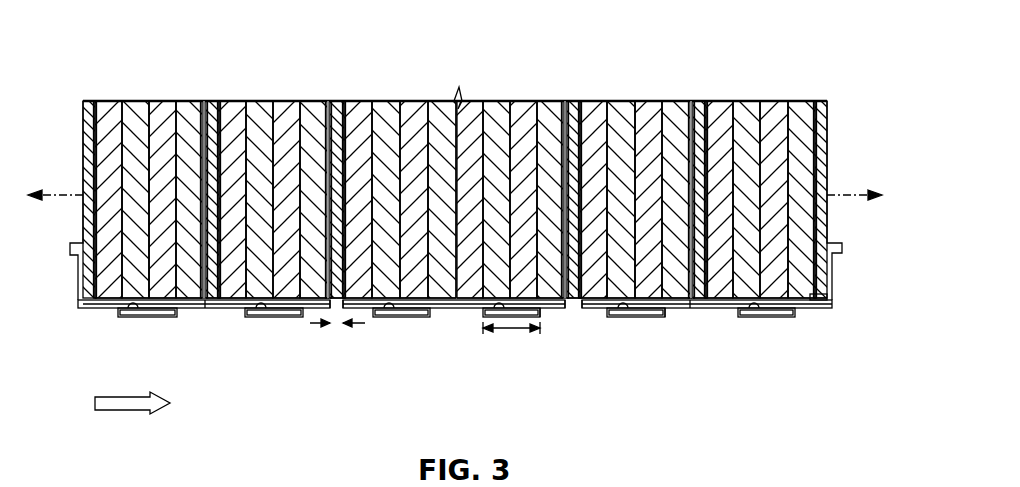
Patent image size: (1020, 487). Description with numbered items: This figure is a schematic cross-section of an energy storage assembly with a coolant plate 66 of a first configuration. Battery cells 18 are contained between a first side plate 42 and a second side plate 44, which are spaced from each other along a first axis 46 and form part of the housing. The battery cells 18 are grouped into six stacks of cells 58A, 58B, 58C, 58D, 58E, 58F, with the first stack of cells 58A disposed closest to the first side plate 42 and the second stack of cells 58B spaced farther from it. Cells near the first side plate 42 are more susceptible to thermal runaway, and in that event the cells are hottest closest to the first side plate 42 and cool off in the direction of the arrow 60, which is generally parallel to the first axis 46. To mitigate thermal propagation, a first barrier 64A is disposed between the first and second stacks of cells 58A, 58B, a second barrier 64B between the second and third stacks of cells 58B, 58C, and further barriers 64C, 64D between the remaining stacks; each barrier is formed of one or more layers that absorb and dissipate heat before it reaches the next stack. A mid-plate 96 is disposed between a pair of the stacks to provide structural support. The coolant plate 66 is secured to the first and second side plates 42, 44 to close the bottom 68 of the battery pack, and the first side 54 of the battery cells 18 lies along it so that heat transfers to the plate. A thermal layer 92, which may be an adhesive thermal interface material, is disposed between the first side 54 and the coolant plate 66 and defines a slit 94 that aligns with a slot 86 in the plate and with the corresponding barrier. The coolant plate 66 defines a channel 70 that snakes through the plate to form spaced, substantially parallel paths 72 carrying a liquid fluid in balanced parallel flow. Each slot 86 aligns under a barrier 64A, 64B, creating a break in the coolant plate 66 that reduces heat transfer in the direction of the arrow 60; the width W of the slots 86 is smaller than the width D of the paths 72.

The battery cell 18 is at (460, 204).
The first side plate 42 is at (95, 122).
The second side plate 44 is at (827, 200).
The first axis 46 is at (845, 193).
The first side of the battery cells 54 is at (812, 300).
The first stack of cells 58A is at (200, 93).
The second stack of cells 58B is at (330, 93).
The third stack of cells 58C is at (452, 93).
The fourth stack of cells 58D is at (563, 93).
The fifth stack of cells 58E is at (690, 93).
The sixth stack of cells 58F is at (768, 82).
The arrow 60 is at (120, 410).
The first barrier 64A is at (208, 101).
The second barrier 64B is at (328, 101).
The barrier 64C is at (565, 101).
The barrier 64D is at (692, 101).
The coolant plate 66 is at (410, 310).
The bottom of the battery pack 68 is at (848, 336).
The channel 70 is at (408, 353).
The paths 72 is at (125, 312).
The slot 86 is at (209, 313).
The thermal layer 92 is at (541, 315).
The slit 94 is at (575, 310).
The mid-plate 96 is at (460, 101).
The width of the slot W is at (347, 355).
The width of the paths D is at (507, 330).